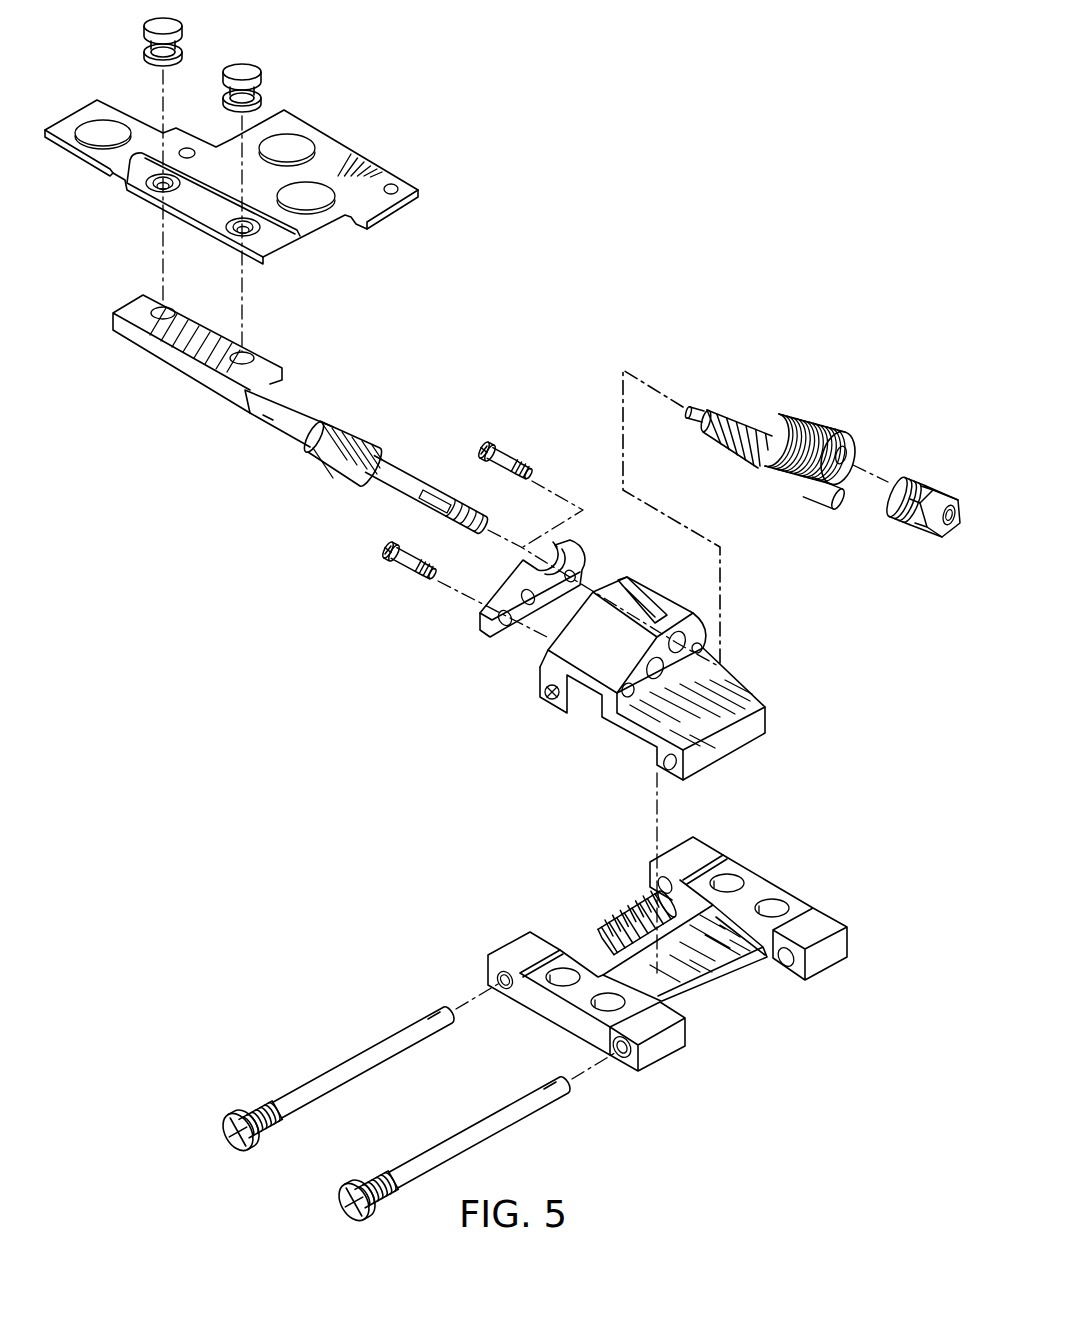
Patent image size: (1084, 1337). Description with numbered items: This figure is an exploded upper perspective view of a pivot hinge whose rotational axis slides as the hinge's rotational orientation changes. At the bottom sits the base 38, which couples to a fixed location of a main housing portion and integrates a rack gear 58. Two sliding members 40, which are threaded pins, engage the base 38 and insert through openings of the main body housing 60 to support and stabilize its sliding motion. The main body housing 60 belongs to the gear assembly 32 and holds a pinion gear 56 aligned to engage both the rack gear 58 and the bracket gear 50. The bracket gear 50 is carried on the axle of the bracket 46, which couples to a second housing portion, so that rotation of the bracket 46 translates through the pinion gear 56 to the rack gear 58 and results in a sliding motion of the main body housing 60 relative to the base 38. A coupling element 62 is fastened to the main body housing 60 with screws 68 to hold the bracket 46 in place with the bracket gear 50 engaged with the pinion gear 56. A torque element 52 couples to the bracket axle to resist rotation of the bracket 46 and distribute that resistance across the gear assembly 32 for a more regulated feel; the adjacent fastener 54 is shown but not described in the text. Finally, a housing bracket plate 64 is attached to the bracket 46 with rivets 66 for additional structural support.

The gear assembly 32 is at (735, 601).
The base 38 is at (758, 888).
The sliding members 40 is at (360, 1050).
The bracket 46 is at (133, 312).
The bracket gear 50 is at (337, 473).
The torque element 52 is at (817, 423).
The nut 54 is at (920, 480).
The pinion gear 56 is at (740, 413).
The rack gear 58 is at (620, 907).
The main body housing 60 is at (737, 698).
The coupling element 62 is at (497, 597).
The housing bracket plate 64 is at (330, 148).
The rivets 66 is at (150, 38).
The screws 68 is at (503, 450).